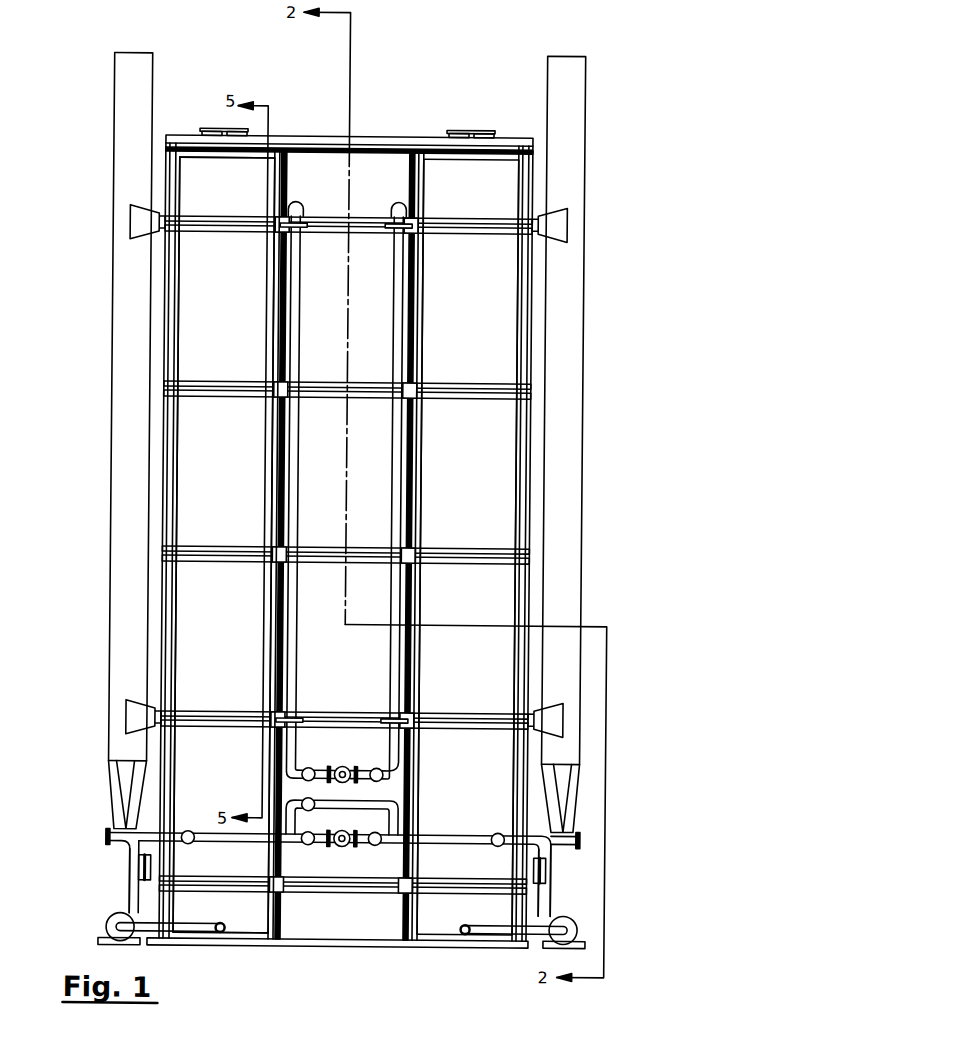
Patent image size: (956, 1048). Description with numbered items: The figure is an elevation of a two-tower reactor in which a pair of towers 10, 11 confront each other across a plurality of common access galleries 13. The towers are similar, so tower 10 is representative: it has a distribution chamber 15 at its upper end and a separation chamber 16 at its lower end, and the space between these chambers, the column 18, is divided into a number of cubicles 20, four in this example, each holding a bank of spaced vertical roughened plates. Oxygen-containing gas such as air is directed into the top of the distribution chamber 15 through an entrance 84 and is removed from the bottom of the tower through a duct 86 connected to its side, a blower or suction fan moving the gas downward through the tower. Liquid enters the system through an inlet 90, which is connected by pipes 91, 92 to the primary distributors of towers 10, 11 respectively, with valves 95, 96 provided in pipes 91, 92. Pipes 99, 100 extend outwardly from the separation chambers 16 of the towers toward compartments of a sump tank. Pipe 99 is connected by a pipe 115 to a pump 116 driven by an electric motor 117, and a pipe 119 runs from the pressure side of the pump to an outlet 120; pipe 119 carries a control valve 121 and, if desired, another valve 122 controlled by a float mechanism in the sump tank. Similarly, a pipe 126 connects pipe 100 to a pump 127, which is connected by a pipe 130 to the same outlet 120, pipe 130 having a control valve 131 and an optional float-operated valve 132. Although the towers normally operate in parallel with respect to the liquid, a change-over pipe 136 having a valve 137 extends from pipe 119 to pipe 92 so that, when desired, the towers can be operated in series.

The tower 10 is at (190, 350).
The tower 11 is at (510, 341).
The common access galleries 13 is at (356, 555).
The distribution chamber 15 is at (258, 202).
The separation chamber 16 is at (256, 912).
The column 18 is at (183, 470).
The cubicle 20 is at (188, 578).
The entrance 84 is at (213, 128).
The duct 86 is at (118, 795).
The inlet 90 is at (356, 750).
The pipe 91 is at (297, 596).
The pipe 92 is at (397, 595).
The valve 95 is at (306, 766).
The valve 96 is at (386, 766).
The pipe 99 is at (226, 922).
The pipe 100 is at (470, 922).
The pipe 115 is at (193, 931).
The pump 116 is at (116, 926).
The electric motor 117 is at (107, 938).
The pipe 119 is at (137, 889).
The outlet 120 is at (344, 848).
The control valve 121 is at (313, 845).
The valve 122 is at (192, 826).
The pipe 126 is at (505, 923).
The pump 127 is at (565, 917).
The pipe 130 is at (560, 884).
The control valve 131 is at (387, 831).
The valve 132 is at (500, 845).
The change-over pipe 136 is at (330, 810).
The valve 137 is at (308, 798).